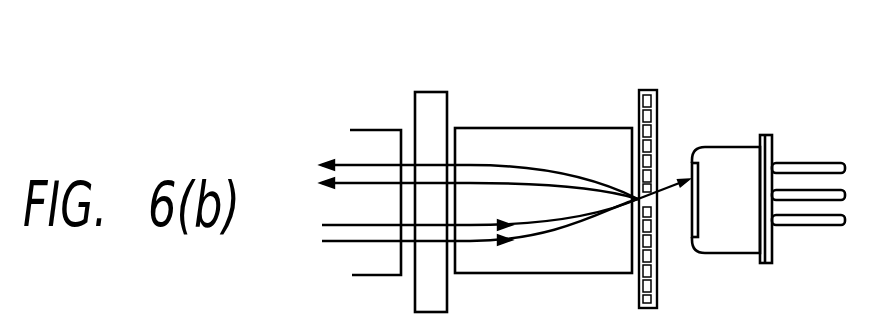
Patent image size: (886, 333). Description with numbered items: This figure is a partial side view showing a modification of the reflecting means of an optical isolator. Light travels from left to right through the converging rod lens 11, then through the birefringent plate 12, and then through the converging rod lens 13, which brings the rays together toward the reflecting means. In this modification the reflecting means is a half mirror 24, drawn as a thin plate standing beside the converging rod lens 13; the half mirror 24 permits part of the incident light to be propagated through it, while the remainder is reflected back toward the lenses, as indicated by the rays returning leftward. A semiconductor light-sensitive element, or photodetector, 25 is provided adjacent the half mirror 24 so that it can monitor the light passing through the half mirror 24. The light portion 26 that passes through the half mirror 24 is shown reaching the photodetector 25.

The converging rod lens 11 is at (378, 143).
The birefringent plate 12 is at (436, 105).
The converging rod lens 13 is at (598, 145).
The half mirror 24 is at (658, 107).
The semiconductor light-sensitive element 25 is at (735, 162).
The light beam passing through pinhole 26 is at (668, 178).